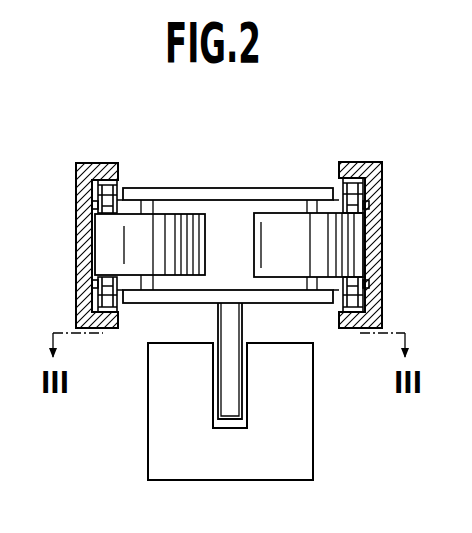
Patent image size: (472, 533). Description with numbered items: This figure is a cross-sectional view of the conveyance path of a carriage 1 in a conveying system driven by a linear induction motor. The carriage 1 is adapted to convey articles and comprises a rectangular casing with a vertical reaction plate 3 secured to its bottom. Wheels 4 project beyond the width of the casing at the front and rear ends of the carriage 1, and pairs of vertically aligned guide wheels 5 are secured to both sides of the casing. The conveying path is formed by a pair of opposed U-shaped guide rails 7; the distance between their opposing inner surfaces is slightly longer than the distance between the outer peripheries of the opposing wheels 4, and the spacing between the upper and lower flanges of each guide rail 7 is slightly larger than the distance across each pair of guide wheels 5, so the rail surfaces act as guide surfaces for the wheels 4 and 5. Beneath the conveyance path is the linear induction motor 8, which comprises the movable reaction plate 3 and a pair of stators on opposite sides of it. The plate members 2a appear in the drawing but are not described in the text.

The carriage 1 is at (258, 171).
The support plates 2a is at (218, 187).
The reaction plate 3 is at (233, 383).
The wheels 4 is at (167, 235).
The guide wheels 5 is at (105, 193).
The guide rails 7 is at (80, 238).
The linear induction motor 8 is at (332, 432).